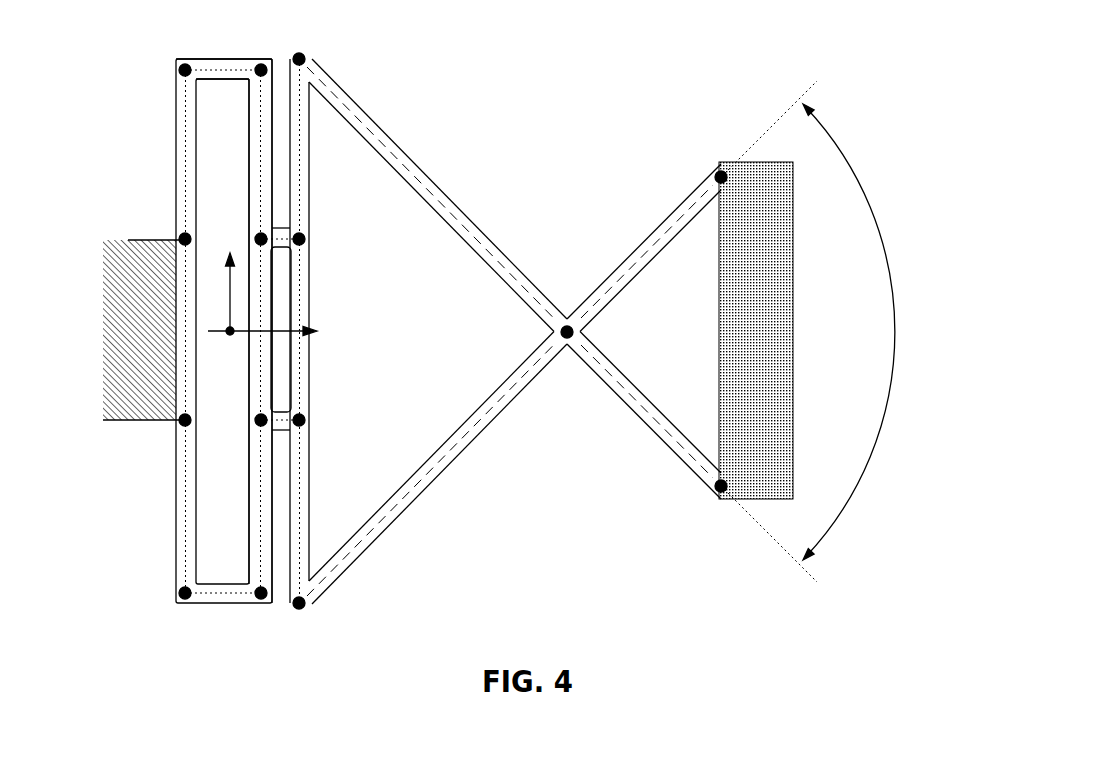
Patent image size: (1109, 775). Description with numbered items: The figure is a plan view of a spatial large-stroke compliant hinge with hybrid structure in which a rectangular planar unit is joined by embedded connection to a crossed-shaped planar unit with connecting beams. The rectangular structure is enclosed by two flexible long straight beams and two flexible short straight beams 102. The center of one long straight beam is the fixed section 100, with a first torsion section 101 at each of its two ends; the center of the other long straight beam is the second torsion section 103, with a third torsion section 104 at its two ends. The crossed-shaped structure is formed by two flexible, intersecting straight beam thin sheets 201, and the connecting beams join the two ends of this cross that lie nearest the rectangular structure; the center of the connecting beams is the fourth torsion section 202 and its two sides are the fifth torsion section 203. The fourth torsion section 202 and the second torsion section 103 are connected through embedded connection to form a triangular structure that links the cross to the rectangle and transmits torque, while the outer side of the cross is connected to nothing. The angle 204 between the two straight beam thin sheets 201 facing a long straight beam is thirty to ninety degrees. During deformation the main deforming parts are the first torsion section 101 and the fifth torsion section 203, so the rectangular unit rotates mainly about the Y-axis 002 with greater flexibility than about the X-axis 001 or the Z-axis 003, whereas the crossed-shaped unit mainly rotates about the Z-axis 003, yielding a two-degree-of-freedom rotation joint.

The fixed section 100 is at (183, 340).
The first torsion section 101 is at (187, 173).
The flexible short straight beams 102 is at (218, 72).
The second torsion section 103 is at (258, 368).
The third torsion section 104 is at (263, 147).
The X-axis 001 is at (272, 331).
The Y-axis 002 is at (229, 252).
The Z-axis 003 is at (230, 333).
The straight beam thin sheets 201 is at (522, 261).
The fourth torsion section 202 is at (300, 302).
The fifth torsion section 203 is at (302, 162).
The angle 204 is at (834, 331).